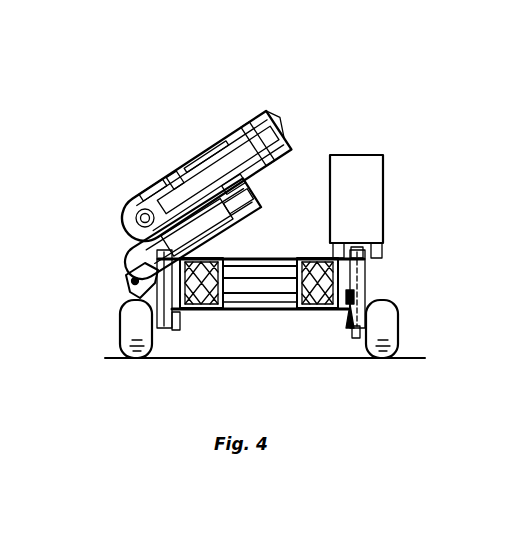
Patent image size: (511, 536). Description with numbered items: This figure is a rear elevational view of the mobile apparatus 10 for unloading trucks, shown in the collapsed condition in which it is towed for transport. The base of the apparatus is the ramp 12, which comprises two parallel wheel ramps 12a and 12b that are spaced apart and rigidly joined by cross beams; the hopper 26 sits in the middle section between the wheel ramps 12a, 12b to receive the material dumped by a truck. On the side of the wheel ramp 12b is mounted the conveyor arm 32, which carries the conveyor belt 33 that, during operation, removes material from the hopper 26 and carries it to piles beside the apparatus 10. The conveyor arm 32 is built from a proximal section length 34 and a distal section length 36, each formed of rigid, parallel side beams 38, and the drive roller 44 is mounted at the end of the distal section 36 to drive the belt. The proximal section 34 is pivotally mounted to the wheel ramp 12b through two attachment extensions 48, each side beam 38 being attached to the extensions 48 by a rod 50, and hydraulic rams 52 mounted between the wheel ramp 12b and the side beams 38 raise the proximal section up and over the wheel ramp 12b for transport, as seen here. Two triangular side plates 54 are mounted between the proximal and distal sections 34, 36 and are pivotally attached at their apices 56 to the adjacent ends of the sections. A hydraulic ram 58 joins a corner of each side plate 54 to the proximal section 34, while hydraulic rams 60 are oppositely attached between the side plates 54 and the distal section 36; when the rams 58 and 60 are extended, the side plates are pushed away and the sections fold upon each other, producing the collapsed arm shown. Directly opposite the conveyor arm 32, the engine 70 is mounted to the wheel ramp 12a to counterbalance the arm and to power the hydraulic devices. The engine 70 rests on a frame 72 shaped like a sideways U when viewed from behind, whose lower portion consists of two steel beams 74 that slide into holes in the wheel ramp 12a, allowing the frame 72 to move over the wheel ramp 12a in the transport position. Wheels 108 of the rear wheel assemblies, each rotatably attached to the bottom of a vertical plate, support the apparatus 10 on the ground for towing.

The mobile apparatus 10 is at (407, 156).
The ramp 12 is at (324, 326).
The wheel ramp 12a is at (306, 310).
The wheel ramp 12b is at (211, 312).
The hopper 26 is at (254, 272).
The conveyor arm 32 is at (168, 151).
The conveyor belt 33 is at (231, 130).
The proximal section length 34 is at (262, 188).
The distal section length 36 is at (217, 130).
The side beams 38 is at (150, 187).
The drive roller 44 is at (141, 215).
The attachment extensions 48 is at (147, 273).
The rod 50 is at (128, 296).
The hydraulic rams 52 is at (233, 227).
The triangular side plates 54 is at (275, 130).
The apices 56 is at (279, 140).
The hydraulic ram 58 is at (266, 182).
The hydraulic rams 60 is at (203, 137).
The engine 70 is at (372, 188).
The frame 72 is at (381, 256).
The steel beams 74 is at (368, 292).
The wheel 108 is at (128, 330).